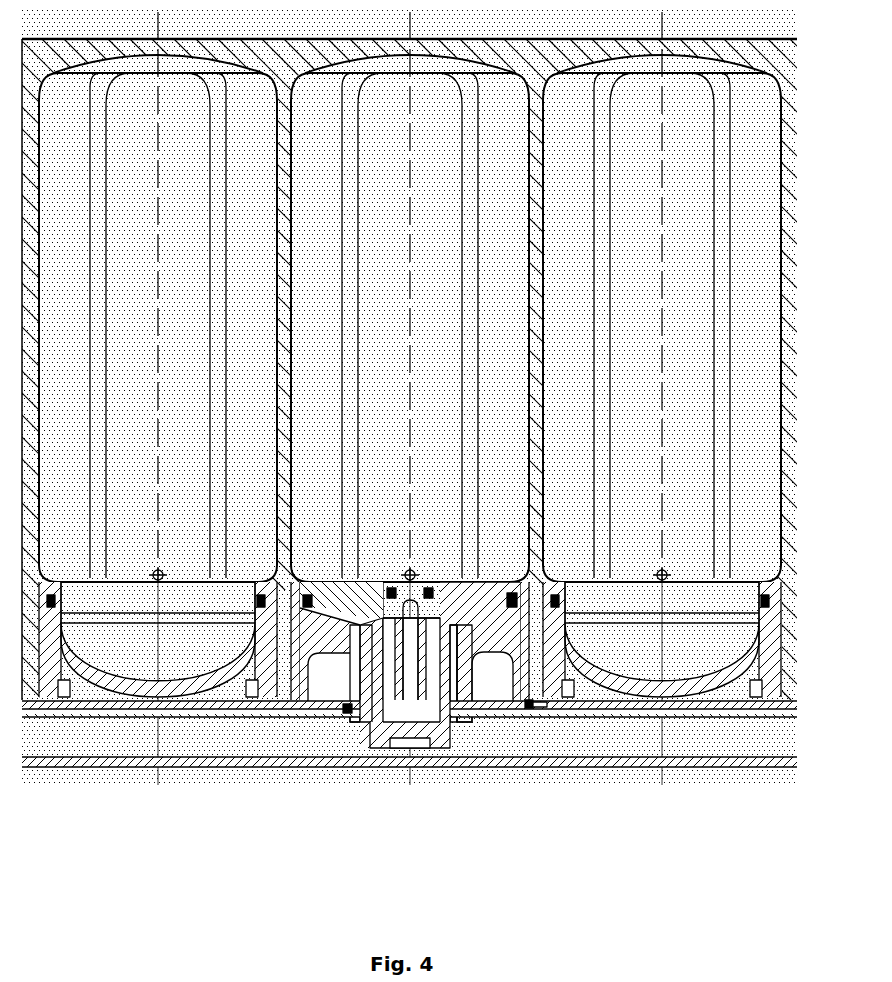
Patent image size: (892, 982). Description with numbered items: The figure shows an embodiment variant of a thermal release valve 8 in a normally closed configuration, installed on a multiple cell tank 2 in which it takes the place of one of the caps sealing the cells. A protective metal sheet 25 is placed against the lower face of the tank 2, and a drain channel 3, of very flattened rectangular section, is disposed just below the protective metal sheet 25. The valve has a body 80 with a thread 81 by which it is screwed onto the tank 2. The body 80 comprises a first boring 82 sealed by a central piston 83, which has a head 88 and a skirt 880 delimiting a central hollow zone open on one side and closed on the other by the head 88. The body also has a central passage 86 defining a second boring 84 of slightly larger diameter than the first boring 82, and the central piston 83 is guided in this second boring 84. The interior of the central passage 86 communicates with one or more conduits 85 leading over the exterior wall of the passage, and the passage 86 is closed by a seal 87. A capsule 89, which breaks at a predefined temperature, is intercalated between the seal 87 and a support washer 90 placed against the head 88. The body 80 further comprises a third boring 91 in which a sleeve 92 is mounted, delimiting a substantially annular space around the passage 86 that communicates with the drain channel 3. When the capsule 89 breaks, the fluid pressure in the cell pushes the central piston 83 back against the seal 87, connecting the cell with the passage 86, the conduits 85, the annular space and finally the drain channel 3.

The tank 2 is at (786, 369).
The drain channel 3 is at (633, 763).
The thermal release valve 8 is at (349, 773).
The protective metal sheet 25 is at (770, 702).
The body 80 is at (283, 693).
The thread 81 is at (533, 708).
The first boring 82 is at (439, 604).
The central piston 83 is at (423, 577).
The second boring 84 is at (476, 634).
The conduits 85 is at (303, 585).
The central passage 86 is at (349, 712).
The seal 87 is at (415, 730).
The head 88 is at (393, 586).
The capsule 89 is at (388, 742).
The support washer 90 is at (453, 725).
The third boring 91 is at (545, 612).
The sleeve 92 is at (475, 678).
The skirt 880 is at (361, 588).